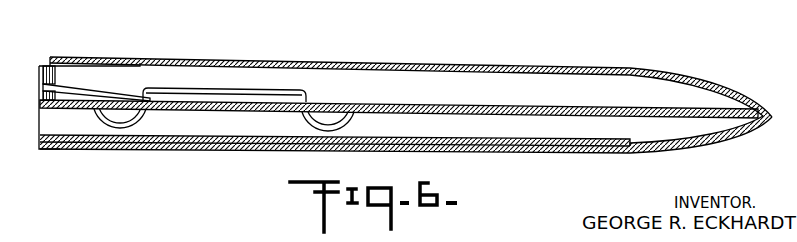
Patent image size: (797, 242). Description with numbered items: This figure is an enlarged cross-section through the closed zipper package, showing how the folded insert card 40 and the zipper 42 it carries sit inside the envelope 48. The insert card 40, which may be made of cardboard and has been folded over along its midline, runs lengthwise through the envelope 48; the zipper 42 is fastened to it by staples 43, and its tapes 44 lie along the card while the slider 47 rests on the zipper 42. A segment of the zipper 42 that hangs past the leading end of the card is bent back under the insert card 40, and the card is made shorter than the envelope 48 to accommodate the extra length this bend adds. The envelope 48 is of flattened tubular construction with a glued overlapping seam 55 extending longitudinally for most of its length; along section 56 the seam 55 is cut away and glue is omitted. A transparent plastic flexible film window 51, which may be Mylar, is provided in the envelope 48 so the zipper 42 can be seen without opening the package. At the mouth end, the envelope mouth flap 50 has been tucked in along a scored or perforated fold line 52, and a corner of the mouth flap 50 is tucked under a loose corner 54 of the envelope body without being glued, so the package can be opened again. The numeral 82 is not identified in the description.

The insert card 40 is at (456, 84).
The zipper 42 is at (117, 90).
The staples 43 is at (215, 88).
The tapes 44 is at (276, 91).
The slider 47 is at (56, 82).
The envelope 48 is at (547, 40).
The envelope mouth flap 50 is at (646, 148).
The transparent plastic flexible film window 51 is at (60, 78).
The fold line 52 is at (770, 110).
The loose corner of the envelope body 54 is at (733, 140).
The glued overlapping seam 55 is at (80, 152).
The section 56 is at (490, 152).
The arcuate bulges 82 is at (332, 102).